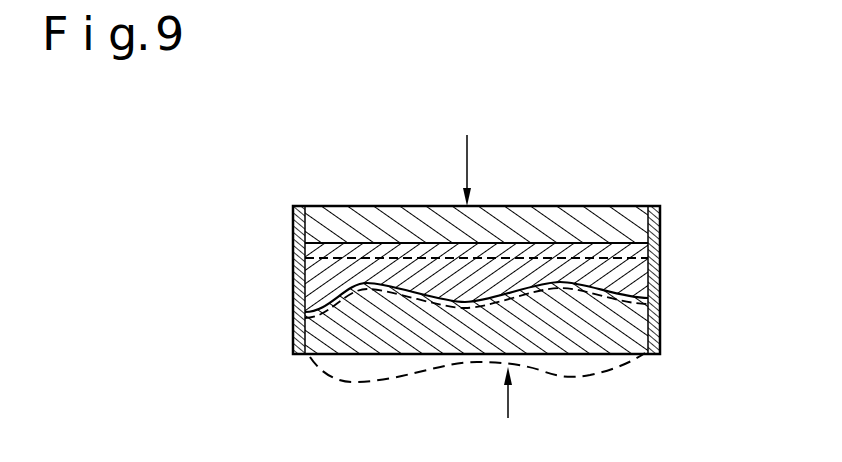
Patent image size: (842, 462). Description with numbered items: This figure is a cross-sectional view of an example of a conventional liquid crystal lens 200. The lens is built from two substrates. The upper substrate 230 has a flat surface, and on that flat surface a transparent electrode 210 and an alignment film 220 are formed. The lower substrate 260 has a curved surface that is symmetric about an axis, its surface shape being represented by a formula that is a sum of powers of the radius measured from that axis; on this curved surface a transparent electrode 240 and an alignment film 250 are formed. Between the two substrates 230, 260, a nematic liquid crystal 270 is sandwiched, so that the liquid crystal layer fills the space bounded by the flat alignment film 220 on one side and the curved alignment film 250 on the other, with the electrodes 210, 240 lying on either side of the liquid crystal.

The liquid crystal lens 200 is at (328, 146).
The transparent electrode 210 is at (660, 228).
The alignment film 220 is at (292, 282).
The substrate 230 is at (562, 206).
The transparent electrode 240 is at (292, 320).
The alignment film 250 is at (660, 276).
The substrate 260 is at (645, 322).
The nematic liquid crystal 270 is at (428, 256).